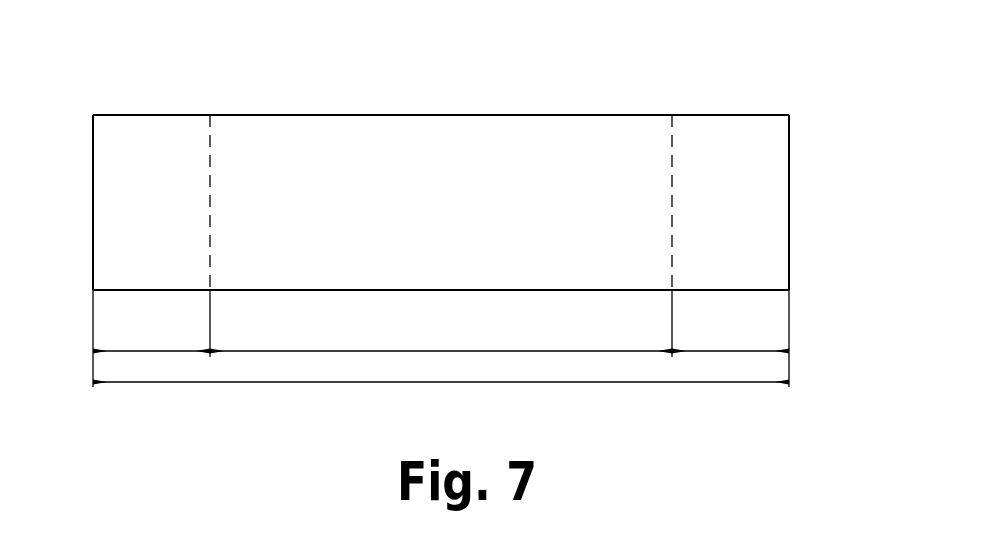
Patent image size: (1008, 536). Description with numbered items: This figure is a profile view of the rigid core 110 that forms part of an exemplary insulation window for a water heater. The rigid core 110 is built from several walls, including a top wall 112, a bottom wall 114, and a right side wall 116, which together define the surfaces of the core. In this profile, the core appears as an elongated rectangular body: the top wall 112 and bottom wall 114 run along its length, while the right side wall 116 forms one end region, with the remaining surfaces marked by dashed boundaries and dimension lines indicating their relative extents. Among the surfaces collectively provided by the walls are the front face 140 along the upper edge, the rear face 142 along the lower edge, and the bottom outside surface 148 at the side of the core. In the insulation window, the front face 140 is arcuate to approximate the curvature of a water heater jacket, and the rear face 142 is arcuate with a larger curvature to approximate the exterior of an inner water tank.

The rigid core 110 is at (743, 74).
The top wall 112 is at (115, 222).
The bottom wall 114 is at (767, 218).
The right side wall 116 is at (449, 218).
The front face 140 is at (585, 114).
The rear face 142 is at (342, 290).
The bottom outside surface 148 is at (789, 180).